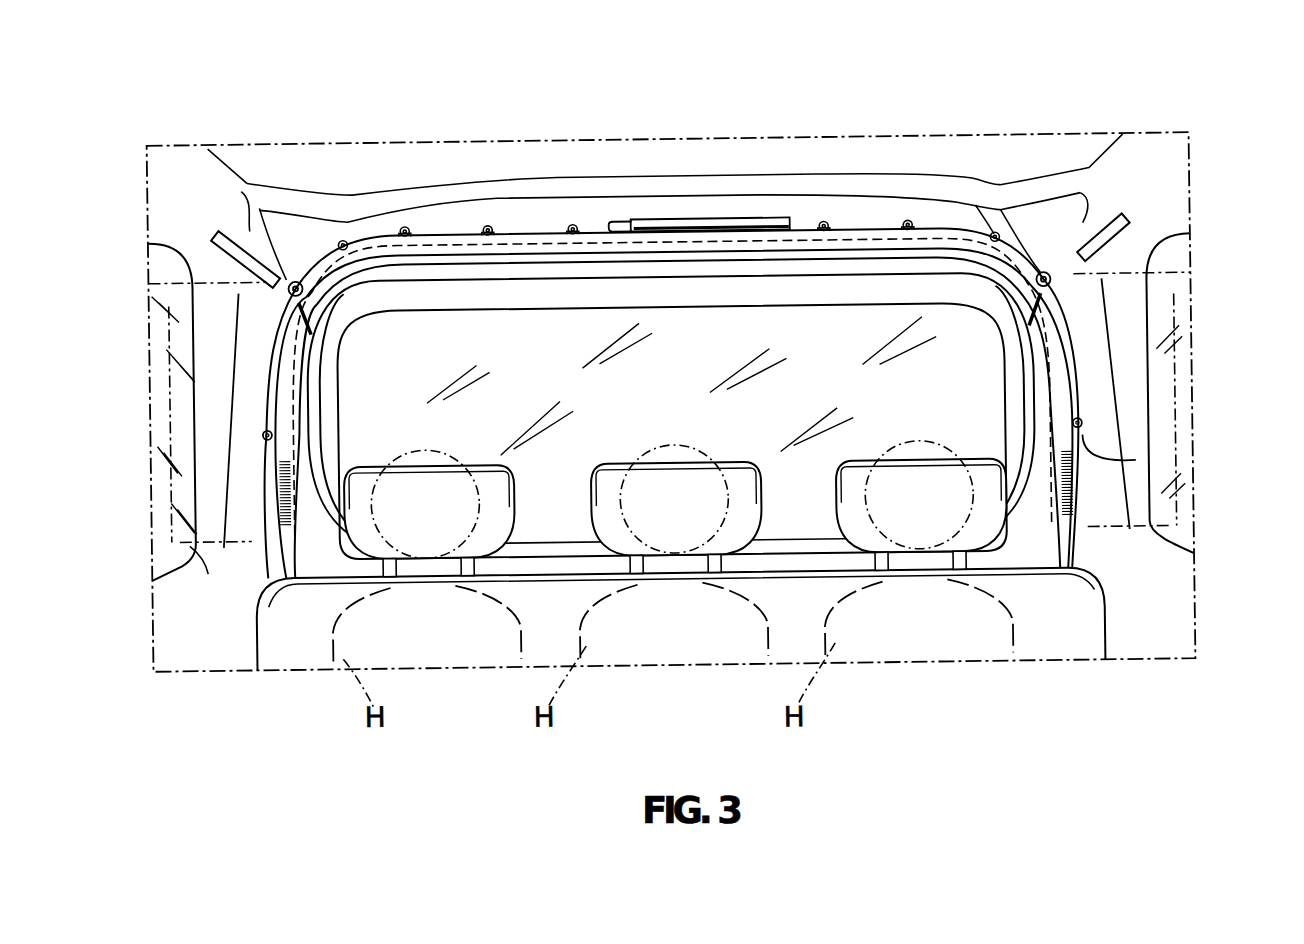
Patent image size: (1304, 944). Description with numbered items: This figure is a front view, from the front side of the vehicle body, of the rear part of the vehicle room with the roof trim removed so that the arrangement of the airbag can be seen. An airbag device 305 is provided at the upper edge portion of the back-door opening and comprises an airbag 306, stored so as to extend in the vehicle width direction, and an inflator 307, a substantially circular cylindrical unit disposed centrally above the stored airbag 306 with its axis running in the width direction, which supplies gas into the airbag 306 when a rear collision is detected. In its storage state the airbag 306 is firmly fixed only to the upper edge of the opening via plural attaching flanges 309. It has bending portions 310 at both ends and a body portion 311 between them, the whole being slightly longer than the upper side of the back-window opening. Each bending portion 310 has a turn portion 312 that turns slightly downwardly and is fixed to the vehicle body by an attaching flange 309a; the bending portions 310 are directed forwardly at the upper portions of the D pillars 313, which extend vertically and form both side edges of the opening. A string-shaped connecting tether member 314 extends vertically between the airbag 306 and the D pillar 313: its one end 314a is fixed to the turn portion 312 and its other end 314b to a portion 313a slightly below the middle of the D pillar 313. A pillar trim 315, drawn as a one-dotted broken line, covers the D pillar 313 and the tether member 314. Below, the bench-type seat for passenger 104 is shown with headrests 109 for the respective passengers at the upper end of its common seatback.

The seat for passenger 104 is at (1045, 648).
The headrest 109 is at (448, 480).
The airbag device 305 is at (719, 131).
The airbag 306 is at (600, 240).
The inflator 307 is at (705, 219).
The attaching flange 309 is at (346, 236).
The attaching flange 309a is at (297, 276).
The bending portion 310 is at (211, 244).
The body portion 311 is at (368, 294).
The turn portion 312 is at (305, 350).
The D pillar 313 is at (219, 381).
The portion of the D pillar 313a is at (268, 447).
The connecting tether member 314 is at (287, 374).
The one end of the connecting tether member 314a is at (313, 325).
The other end of the connecting tether member 314b is at (272, 430).
The pillar trim 315 is at (207, 540).